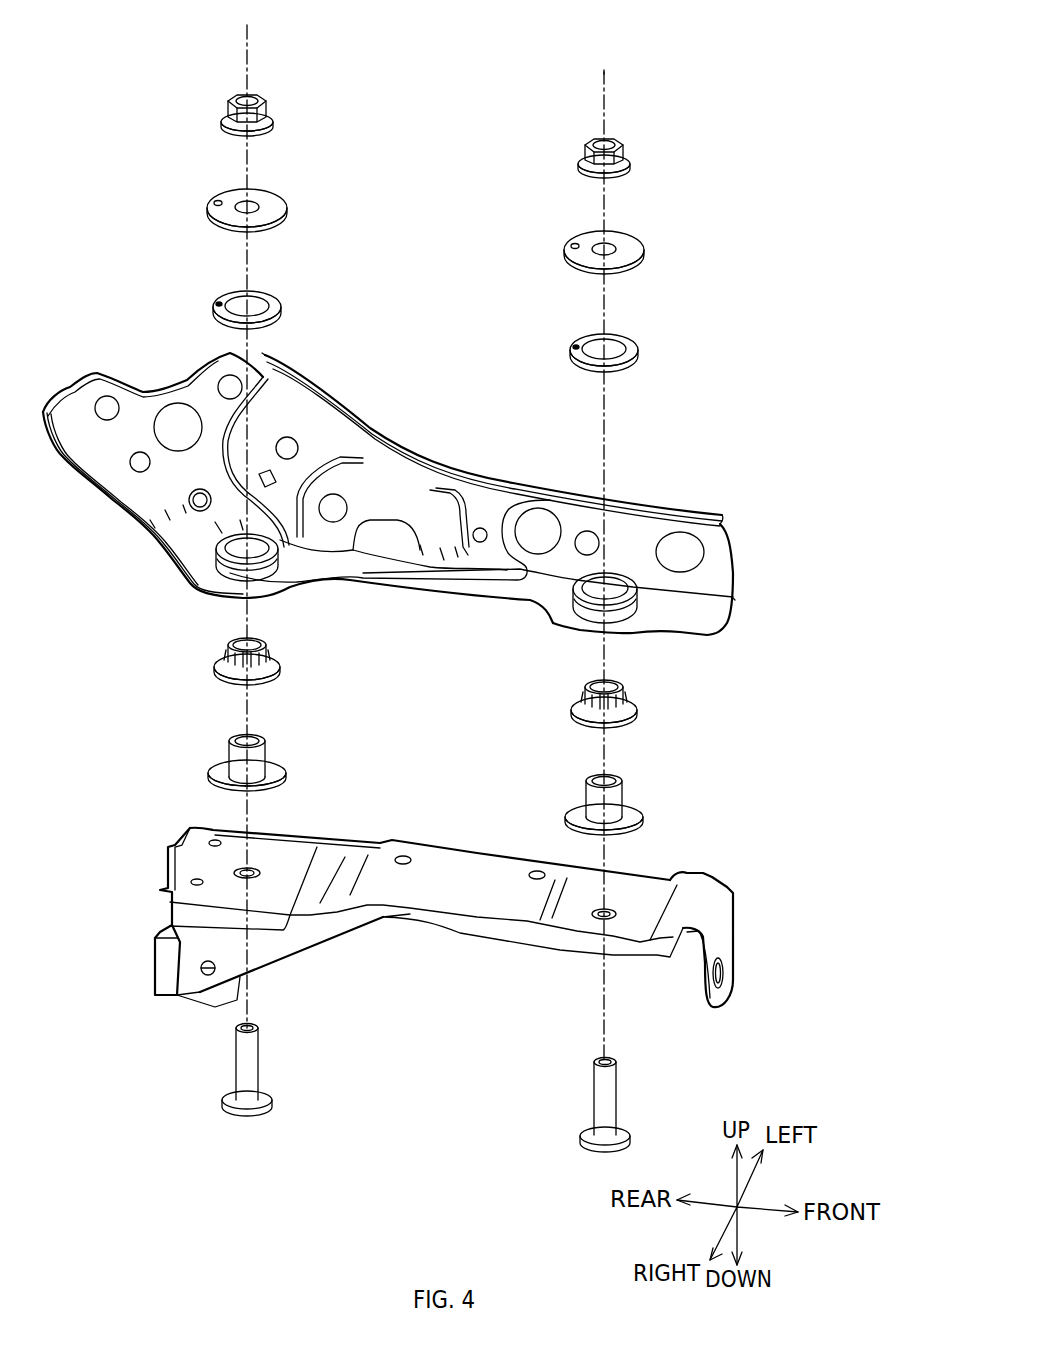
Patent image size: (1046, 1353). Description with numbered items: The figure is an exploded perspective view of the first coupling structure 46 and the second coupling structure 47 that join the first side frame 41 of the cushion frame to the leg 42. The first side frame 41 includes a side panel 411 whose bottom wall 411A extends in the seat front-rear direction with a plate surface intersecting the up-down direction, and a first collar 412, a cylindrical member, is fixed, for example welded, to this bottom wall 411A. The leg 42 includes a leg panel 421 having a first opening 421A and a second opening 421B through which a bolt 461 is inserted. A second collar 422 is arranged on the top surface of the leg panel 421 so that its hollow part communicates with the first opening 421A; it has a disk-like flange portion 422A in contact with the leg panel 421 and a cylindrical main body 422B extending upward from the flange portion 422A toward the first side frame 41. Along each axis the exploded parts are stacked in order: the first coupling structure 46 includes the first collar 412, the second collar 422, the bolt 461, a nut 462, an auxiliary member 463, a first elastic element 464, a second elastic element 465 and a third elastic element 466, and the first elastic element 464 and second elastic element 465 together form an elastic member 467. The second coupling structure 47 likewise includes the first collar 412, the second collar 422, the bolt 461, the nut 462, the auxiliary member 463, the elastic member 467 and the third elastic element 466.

The first side frame 41 is at (715, 491).
The side panel 411 is at (634, 537).
The bottom wall 411A is at (707, 620).
The first collar 412 is at (203, 557).
The leg 42 is at (757, 938).
The leg panel 421 is at (707, 895).
The first opening 421A is at (260, 870).
The second opening 421B is at (592, 912).
The second collar 422 is at (205, 747).
The flange portion 422A is at (275, 775).
The main body 422B is at (260, 752).
The first coupling structure 46 is at (196, 72).
The second coupling structure 47 is at (665, 103).
The bolt 461 is at (237, 1045).
The nut 462 is at (230, 100).
The auxiliary member 463 is at (225, 197).
The first elastic element 464 is at (283, 670).
The second elastic element 465 is at (280, 653).
The third elastic element 466 is at (222, 305).
The elastic member 467 is at (205, 655).